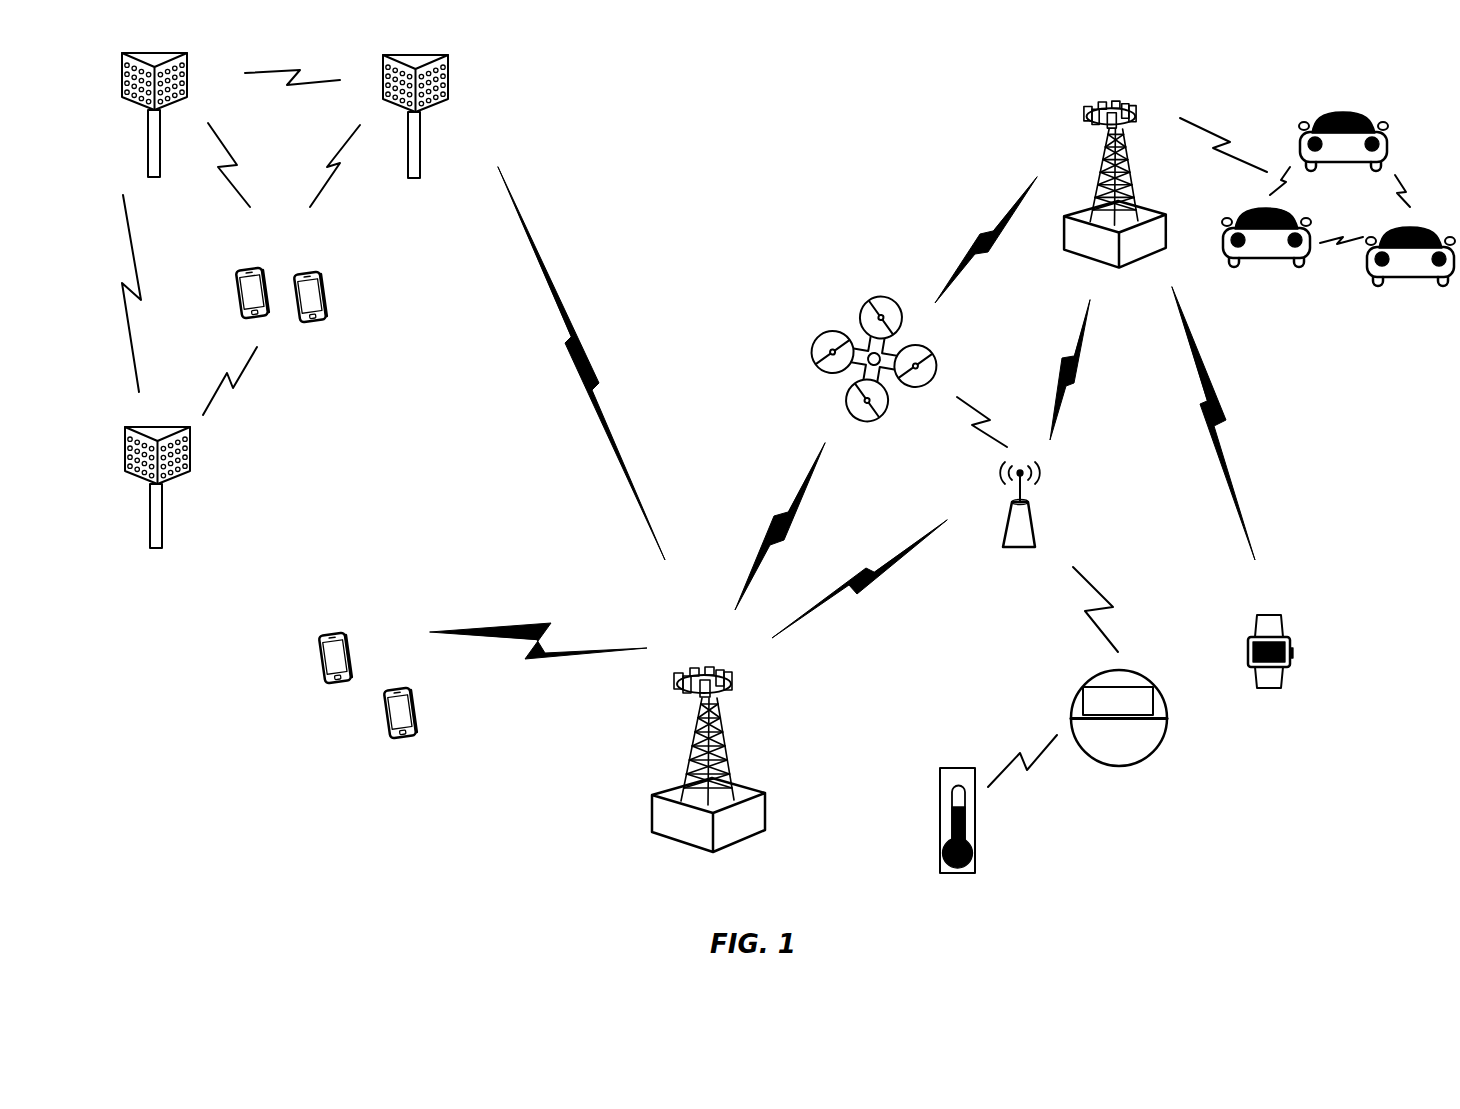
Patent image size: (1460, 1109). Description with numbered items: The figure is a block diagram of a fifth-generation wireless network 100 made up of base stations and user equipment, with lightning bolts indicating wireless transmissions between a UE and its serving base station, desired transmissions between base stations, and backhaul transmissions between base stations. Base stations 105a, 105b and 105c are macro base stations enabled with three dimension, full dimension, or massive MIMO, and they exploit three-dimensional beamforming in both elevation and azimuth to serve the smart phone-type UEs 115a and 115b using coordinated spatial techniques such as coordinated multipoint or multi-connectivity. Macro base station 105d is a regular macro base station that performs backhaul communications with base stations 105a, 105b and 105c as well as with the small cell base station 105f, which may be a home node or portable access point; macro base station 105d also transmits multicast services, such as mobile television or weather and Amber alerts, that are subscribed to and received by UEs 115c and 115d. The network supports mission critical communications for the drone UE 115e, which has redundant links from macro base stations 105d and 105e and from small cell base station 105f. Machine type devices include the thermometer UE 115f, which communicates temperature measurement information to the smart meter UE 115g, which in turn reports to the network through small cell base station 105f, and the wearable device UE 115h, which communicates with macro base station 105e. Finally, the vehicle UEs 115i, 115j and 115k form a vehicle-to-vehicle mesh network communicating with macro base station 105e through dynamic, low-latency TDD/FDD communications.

The 5G network 100 is at (869, 86).
The macro base station enabled with 3D, FD, or massive MIMO 105a is at (148, 152).
The macro base station enabled with 3D, FD, or massive MIMO 105b is at (421, 157).
The macro base station enabled with 3D, FD, or massive MIMO 105c is at (150, 541).
The macro base station 105d is at (666, 838).
The macro base station 105e is at (1080, 258).
The small cell base station 105f is at (1006, 543).
The UE 115a is at (237, 282).
The UE 115b is at (324, 288).
The UE 115c is at (321, 643).
The UE 115d is at (414, 703).
The UE (drone) 115e is at (814, 353).
The UE (thermometer) 115f is at (975, 862).
The UE (smart meter) 115g is at (1140, 760).
The UE (wearable device) 115h is at (1283, 685).
The UE (vehicle) 115i is at (1358, 117).
The UE (vehicle) 115j is at (1432, 279).
The UE (vehicle) 115k is at (1240, 266).